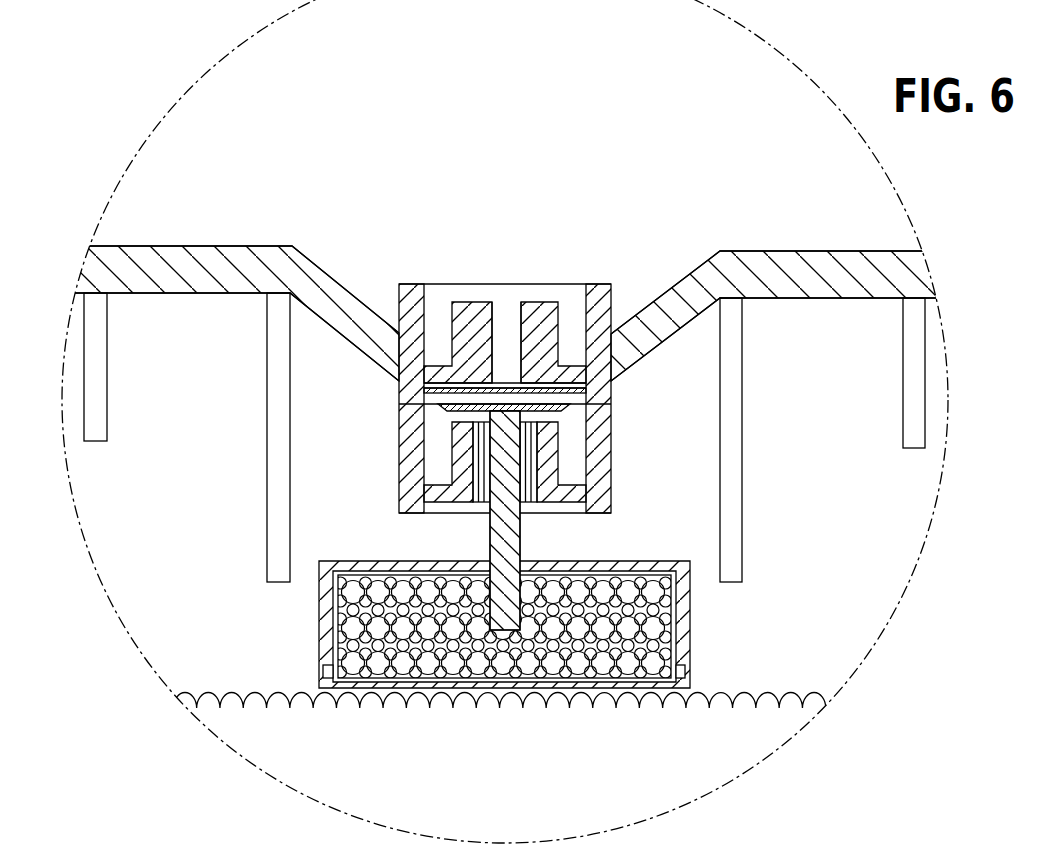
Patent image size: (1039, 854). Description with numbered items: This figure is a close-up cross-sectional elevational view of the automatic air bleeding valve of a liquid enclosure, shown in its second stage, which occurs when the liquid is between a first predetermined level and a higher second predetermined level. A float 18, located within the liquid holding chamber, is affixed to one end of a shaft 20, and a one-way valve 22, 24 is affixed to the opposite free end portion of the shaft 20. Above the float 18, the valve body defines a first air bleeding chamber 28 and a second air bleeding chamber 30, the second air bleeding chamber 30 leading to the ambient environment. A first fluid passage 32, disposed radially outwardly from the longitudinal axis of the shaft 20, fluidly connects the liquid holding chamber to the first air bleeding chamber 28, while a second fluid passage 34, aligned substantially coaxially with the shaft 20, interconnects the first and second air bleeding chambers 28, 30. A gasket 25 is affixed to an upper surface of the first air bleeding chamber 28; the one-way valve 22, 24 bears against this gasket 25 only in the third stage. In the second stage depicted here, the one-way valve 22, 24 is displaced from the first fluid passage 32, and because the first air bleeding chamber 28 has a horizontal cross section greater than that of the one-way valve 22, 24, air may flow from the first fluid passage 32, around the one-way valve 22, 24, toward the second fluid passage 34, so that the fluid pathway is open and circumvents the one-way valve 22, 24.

The float 18 is at (690, 633).
The shaft 20 is at (518, 530).
The upper magnetic core 22 is at (504, 312).
The one-way valve 24 is at (470, 403).
The gasket 25 is at (440, 395).
The first air bleeding chamber 28 is at (570, 447).
The second air bleeding chamber 30 is at (575, 303).
The first fluid passage 32 is at (477, 500).
The second fluid passage 34 is at (510, 313).